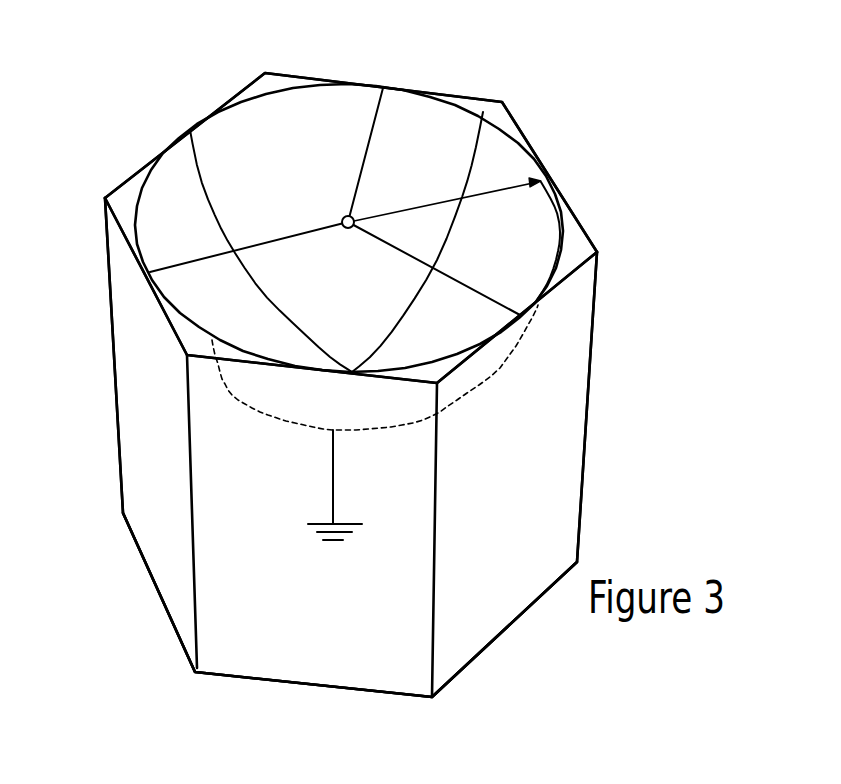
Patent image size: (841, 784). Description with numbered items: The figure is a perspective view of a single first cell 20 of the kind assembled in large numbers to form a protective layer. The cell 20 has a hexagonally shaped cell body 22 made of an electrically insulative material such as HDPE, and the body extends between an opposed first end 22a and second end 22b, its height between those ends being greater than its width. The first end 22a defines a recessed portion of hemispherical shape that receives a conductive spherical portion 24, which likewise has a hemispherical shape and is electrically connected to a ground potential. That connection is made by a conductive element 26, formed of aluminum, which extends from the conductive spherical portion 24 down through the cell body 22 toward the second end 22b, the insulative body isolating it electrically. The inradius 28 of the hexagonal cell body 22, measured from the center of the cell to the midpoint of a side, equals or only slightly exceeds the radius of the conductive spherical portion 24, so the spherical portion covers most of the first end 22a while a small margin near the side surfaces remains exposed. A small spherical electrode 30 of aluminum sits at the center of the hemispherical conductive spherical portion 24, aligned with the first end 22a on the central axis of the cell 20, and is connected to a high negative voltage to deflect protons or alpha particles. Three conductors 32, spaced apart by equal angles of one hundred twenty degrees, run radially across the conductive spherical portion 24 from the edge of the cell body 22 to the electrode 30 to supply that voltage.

The first cell 20 is at (601, 179).
The cell body 22 is at (530, 457).
The first end 22a is at (285, 74).
The second end 22b is at (503, 636).
The conductive spherical portion 24 is at (250, 144).
The conductive element 26 is at (336, 482).
The inradius 28 is at (500, 187).
The electrode 30 is at (357, 215).
The conductors 32 is at (479, 290).